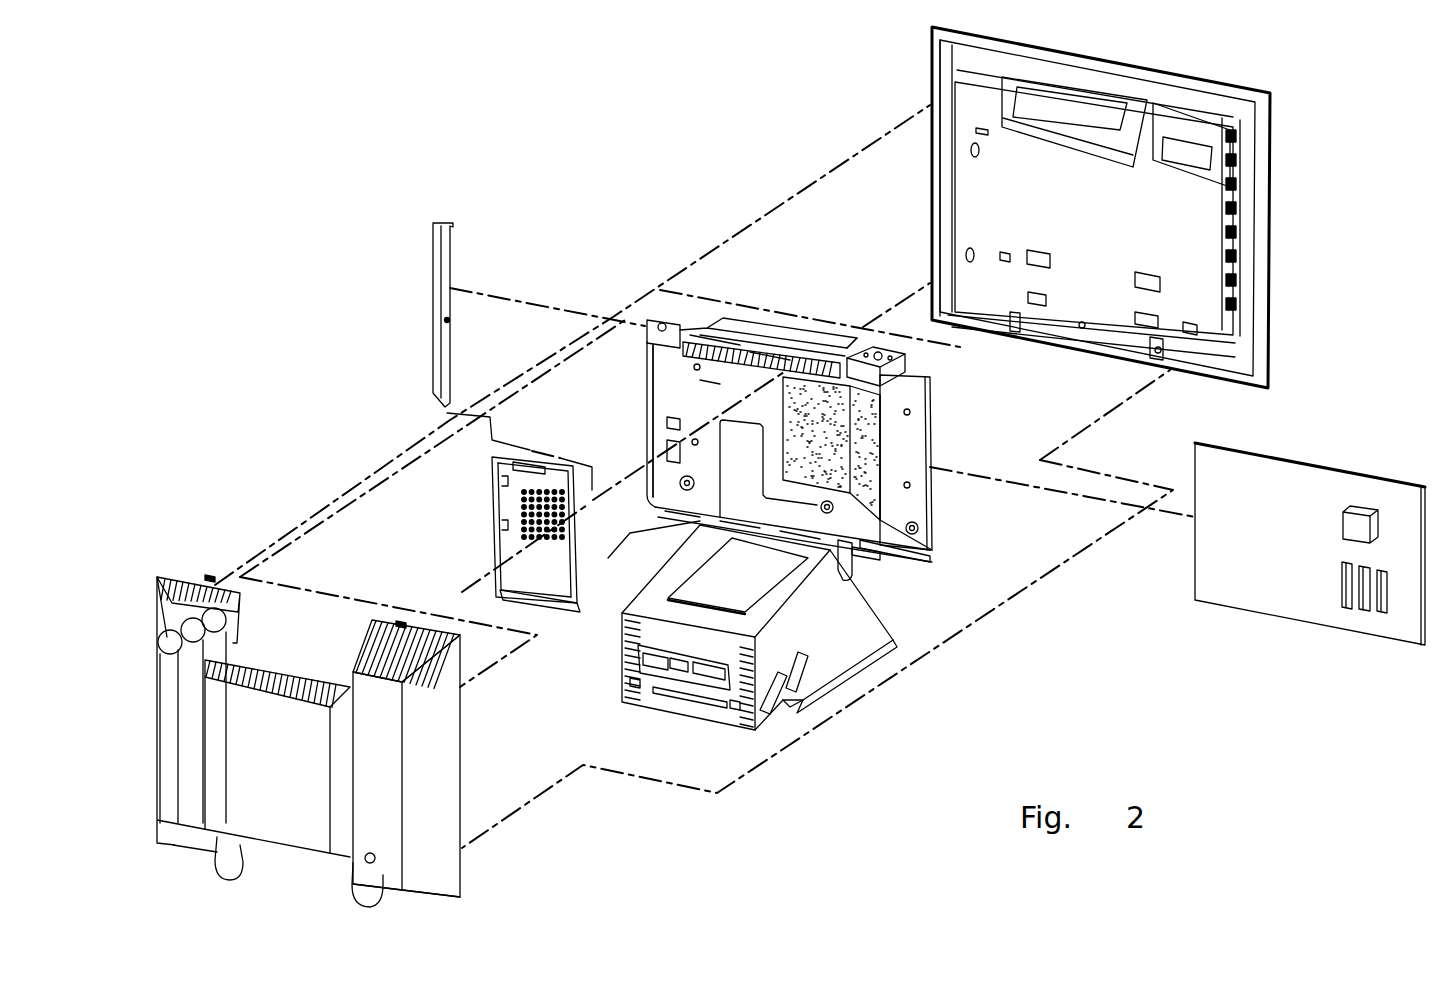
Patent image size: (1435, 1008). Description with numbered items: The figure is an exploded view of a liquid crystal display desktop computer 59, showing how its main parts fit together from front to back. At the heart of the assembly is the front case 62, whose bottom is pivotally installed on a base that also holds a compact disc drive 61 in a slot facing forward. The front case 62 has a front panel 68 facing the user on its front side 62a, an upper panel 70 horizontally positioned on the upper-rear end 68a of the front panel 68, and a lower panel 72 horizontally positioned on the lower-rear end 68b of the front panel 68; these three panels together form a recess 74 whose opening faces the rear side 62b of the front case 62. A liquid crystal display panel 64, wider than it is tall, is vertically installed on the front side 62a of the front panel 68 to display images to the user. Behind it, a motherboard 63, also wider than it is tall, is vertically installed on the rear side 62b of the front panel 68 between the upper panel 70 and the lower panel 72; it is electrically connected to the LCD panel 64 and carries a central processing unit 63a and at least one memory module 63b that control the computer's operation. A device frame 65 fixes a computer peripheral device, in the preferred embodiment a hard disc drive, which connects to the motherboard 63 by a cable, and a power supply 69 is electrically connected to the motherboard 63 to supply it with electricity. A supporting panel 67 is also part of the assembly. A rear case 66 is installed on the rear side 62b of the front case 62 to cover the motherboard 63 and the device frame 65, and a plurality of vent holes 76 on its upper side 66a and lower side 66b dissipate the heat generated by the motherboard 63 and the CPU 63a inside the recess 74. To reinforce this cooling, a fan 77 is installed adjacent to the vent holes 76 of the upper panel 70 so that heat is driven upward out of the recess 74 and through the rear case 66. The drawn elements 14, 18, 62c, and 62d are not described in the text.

The LCD desktop computer 59 is at (390, 135).
The bracket 14 is at (820, 675).
The hard disk drive 18 is at (688, 682).
The compact disc drive 61 is at (855, 575).
The front case 62 is at (1003, 536).
The front side of the front case 62a is at (930, 413).
The rear side of the front case 62b is at (693, 392).
The opening in chassis 62c is at (660, 447).
The lower portion of chassis 62d is at (930, 508).
The motherboard 63 is at (1270, 600).
The central processing unit 63a is at (1358, 528).
The memory module 63b is at (1381, 600).
The liquid crystal display panel 64 is at (1262, 197).
The device frame 65 is at (507, 497).
The rear case 66 is at (440, 757).
The upper side of the rear case 66a is at (290, 672).
The lower side of the rear case 66b is at (277, 847).
The supporting panel 67 is at (434, 277).
The front panel 68 is at (900, 440).
The upper-rear end of the front panel 68a is at (748, 356).
The lower-rear end of the front panel 68b is at (890, 556).
The power supply 69 is at (840, 463).
The upper panel 70 is at (700, 353).
The lower panel 72 is at (925, 552).
The recess 74 is at (711, 398).
The vent holes 76 is at (195, 577).
The fan 77 is at (908, 360).